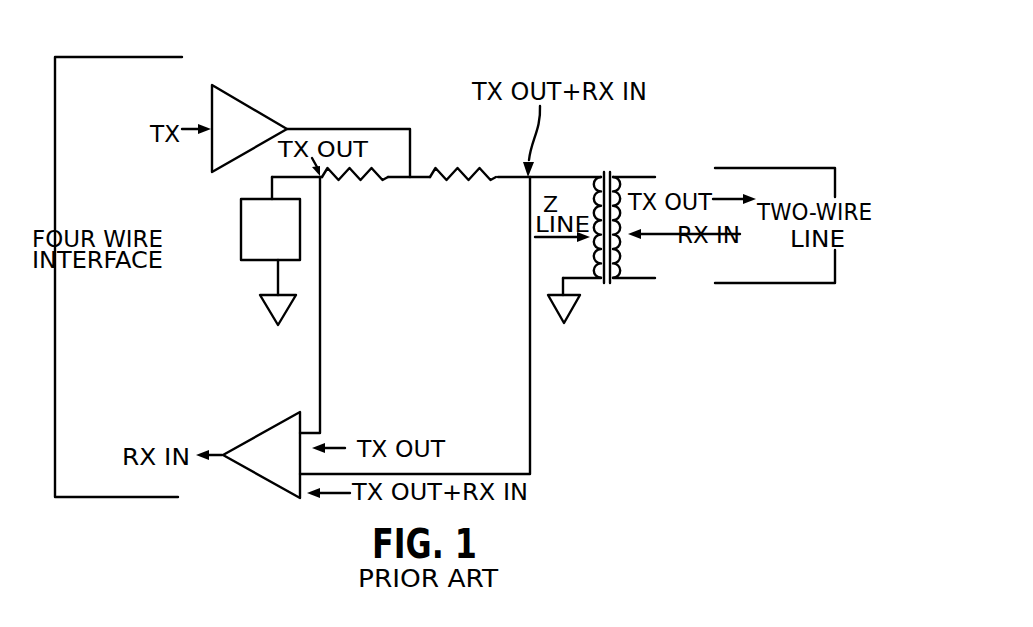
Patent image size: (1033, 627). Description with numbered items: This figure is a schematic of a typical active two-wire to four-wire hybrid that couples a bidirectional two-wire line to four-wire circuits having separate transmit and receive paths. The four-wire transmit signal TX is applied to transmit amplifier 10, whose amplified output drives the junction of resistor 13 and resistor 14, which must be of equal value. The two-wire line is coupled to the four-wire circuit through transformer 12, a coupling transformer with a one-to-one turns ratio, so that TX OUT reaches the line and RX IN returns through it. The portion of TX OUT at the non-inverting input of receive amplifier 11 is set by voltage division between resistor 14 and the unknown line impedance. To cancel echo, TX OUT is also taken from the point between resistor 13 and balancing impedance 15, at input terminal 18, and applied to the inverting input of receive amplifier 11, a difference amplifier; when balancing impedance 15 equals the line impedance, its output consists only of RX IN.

The transmit amplifier 10 is at (265, 110).
The receive amplifier 11 is at (268, 482).
The transformer 12 is at (607, 285).
The resistor 13 is at (370, 185).
The resistor 14 is at (462, 185).
The balancing impedance 15 is at (241, 252).
The input terminal 18 is at (271, 196).